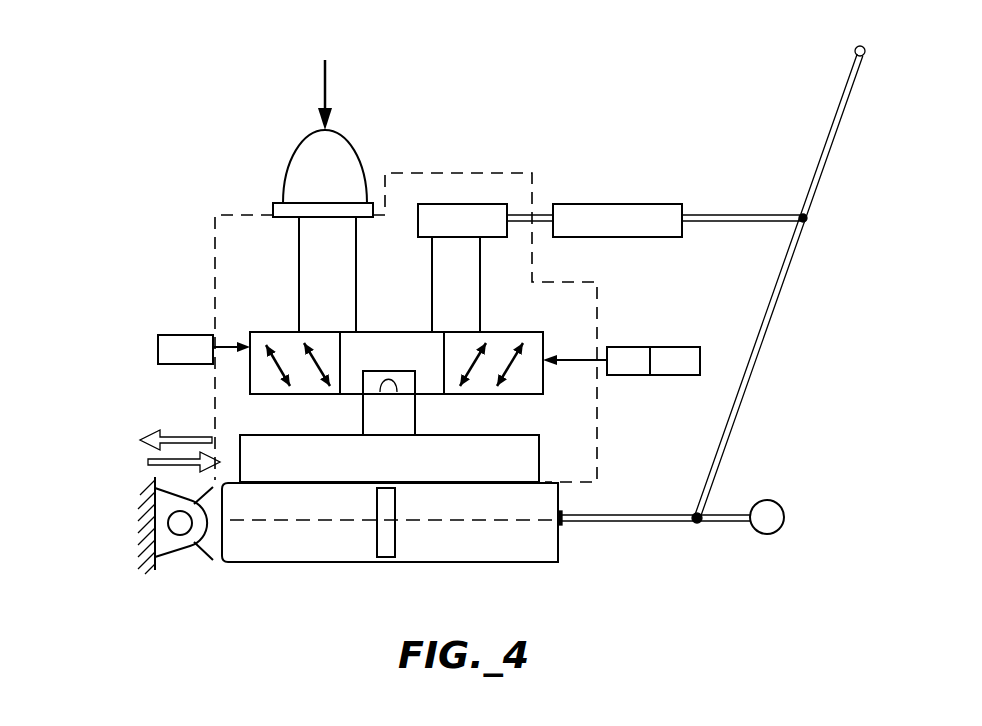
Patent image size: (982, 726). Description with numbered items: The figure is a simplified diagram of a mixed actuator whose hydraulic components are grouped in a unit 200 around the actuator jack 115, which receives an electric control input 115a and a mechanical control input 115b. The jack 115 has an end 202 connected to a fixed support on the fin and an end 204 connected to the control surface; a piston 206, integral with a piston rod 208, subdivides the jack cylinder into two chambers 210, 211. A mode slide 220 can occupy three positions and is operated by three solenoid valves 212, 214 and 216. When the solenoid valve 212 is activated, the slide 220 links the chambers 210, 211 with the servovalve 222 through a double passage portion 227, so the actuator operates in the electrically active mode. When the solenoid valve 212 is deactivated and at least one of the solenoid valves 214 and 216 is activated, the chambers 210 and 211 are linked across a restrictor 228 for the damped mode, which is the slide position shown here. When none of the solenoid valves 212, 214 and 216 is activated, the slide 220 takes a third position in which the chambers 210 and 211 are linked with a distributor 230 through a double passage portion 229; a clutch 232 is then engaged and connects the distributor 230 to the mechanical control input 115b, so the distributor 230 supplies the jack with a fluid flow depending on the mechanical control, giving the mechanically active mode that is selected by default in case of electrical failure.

The actuator jack 115 is at (393, 544).
The electric control input 115a is at (293, 125).
The mechanical control input 115b is at (818, 131).
The control unit 200 is at (213, 215).
The end connected to a fixed support 202 is at (202, 538).
The end connected to the control surface 204 is at (762, 527).
The piston 206 is at (393, 548).
The piston rod 208 is at (617, 524).
The chamber 210 is at (263, 540).
The chamber 211 is at (492, 540).
The solenoid valve 212 is at (172, 342).
The solenoid valve 214 is at (620, 358).
The solenoid valve 216 is at (672, 360).
The mode slide 220 is at (402, 353).
The servovalve 222 is at (336, 154).
The double passage portion 227 is at (282, 338).
The restrictor 228 is at (385, 352).
The double passage portion 229 is at (478, 393).
The distributor 230 is at (480, 212).
The clutch 232 is at (628, 213).